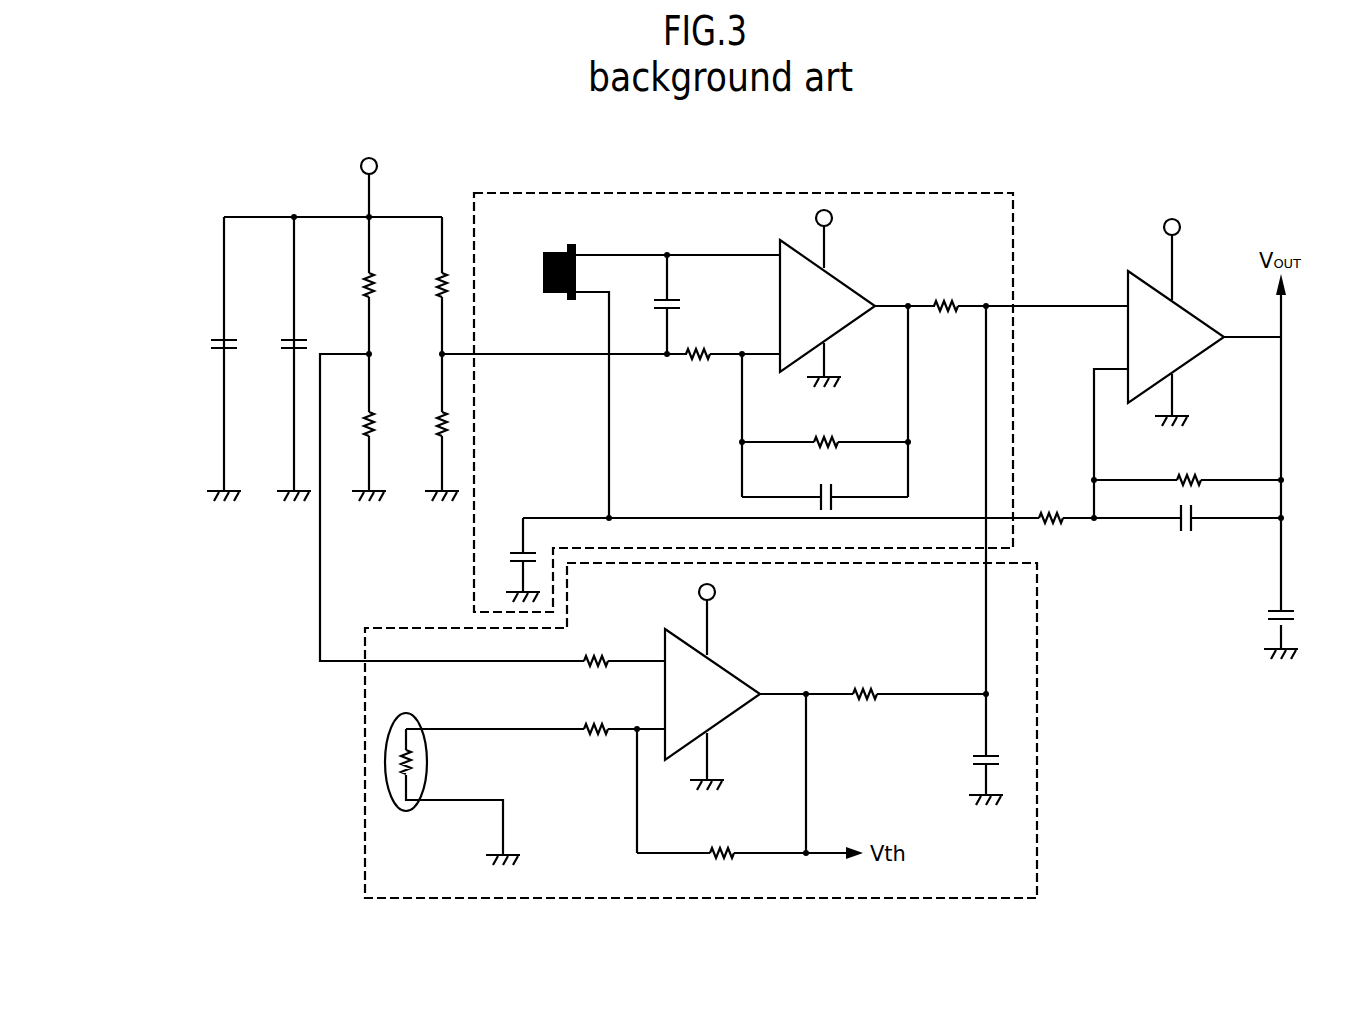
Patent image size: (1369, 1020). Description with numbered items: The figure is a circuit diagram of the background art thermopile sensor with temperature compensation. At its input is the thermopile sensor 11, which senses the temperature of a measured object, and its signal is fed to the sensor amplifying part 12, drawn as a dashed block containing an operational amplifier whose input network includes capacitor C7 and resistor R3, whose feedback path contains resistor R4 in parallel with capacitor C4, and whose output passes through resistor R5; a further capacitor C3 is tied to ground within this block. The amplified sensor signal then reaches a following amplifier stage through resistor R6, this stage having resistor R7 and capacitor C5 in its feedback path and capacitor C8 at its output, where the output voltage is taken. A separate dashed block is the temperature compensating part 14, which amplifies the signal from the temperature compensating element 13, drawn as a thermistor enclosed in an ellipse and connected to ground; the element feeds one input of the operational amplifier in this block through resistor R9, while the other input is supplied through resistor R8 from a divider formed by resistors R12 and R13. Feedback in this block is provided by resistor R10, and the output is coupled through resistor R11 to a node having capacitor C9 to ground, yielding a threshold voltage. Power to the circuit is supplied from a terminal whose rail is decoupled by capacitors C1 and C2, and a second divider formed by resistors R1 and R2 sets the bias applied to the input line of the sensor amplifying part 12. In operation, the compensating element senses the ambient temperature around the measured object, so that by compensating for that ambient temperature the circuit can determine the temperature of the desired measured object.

The thermopile sensor 11 is at (543, 270).
The sensor amplifying part 12 is at (697, 210).
The temperature compensating element 13 is at (407, 826).
The temperature compensating part 14 is at (1022, 847).
The resistor R1 is at (421, 285).
The resistor R2 is at (428, 427).
The resistor R3 is at (701, 339).
The resistor R4 is at (825, 428).
The resistor R5 is at (946, 290).
The resistor R6 is at (1052, 503).
The resistor R7 is at (1187, 464).
The resistor R8 is at (595, 645).
The resistor R9 is at (595, 713).
The resistor R10 is at (721, 838).
The resistor R11 is at (867, 679).
The resistor R12 is at (348, 285).
The resistor R13 is at (354, 427).
The capacitor C1 is at (214, 359).
The capacitor C2 is at (279, 359).
The capacitor C3 is at (509, 560).
The capacitor C4 is at (825, 485).
The capacitor C5 is at (1187, 537).
The capacitor C7 is at (651, 304).
The capacitor C8 is at (1265, 634).
The capacitor C9 is at (970, 749).